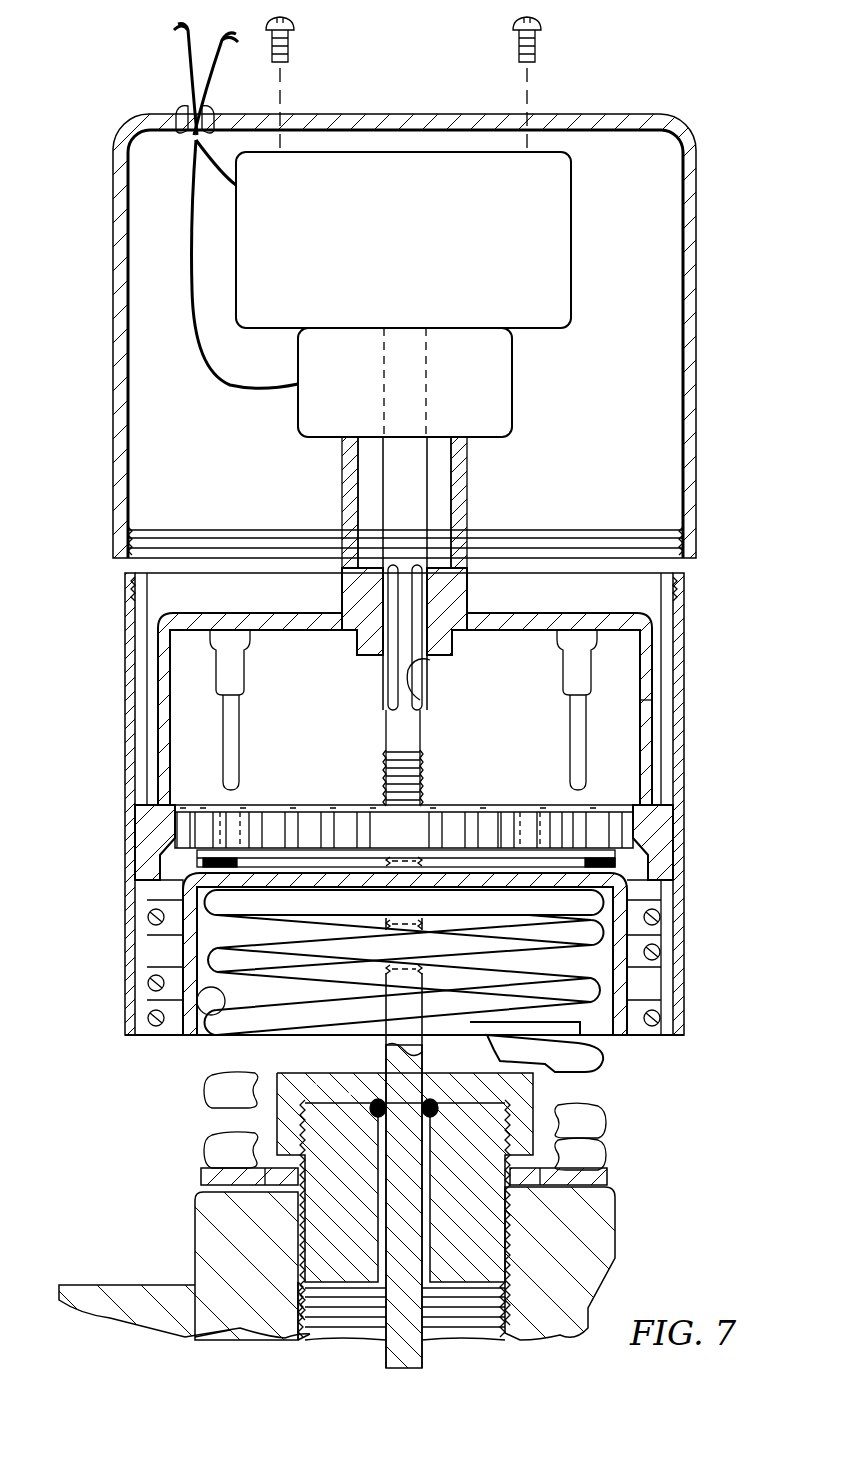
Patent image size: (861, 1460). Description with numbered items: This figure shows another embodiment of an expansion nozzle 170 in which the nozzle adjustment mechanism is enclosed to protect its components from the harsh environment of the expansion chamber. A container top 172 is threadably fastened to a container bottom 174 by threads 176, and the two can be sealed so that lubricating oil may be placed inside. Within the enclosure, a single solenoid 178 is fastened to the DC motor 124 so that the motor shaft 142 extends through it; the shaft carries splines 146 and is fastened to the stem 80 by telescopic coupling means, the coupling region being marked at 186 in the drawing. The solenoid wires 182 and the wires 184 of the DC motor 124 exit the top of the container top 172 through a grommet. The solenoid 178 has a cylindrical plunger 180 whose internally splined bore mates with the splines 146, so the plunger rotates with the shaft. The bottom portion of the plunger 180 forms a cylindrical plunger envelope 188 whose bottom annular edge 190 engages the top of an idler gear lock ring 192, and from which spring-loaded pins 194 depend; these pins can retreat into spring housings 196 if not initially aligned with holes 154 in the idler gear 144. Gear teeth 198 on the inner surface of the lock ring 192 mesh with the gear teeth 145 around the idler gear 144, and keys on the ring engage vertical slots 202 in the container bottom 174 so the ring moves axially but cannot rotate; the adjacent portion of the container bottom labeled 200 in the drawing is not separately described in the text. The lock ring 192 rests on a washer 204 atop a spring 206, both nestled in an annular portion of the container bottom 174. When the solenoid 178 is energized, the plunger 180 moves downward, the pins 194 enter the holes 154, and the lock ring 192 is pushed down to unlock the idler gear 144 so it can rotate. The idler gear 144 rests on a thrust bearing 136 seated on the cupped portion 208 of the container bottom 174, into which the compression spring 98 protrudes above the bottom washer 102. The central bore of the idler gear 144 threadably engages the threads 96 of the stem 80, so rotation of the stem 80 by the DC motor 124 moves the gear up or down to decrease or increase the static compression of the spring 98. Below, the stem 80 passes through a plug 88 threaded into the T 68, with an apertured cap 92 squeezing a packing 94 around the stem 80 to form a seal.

The expansion nozzle 170 is at (92, 80).
The container top 172 is at (697, 345).
The wires of the DC motor 184 is at (232, 186).
The solenoid wires 182 is at (218, 392).
The DC motor 124 is at (571, 236).
The solenoid 178 is at (512, 383).
The cylindrical plunger 180 is at (342, 507).
The motor shaft 142 is at (425, 484).
The splines 146 is at (383, 676).
The coupling 186 is at (417, 688).
The container bottom 174 is at (684, 702).
The threads 176 is at (684, 598).
The vertical slots 202 is at (135, 708).
The spring housings 196 is at (248, 672).
The spring-loaded pins 194 is at (239, 730).
The cylindrical plunger envelope 188 is at (640, 702).
The threads 96 is at (420, 794).
The holes 154 is at (240, 832).
The idler gear 144 is at (504, 825).
The gear teeth 145 is at (548, 826).
The gear teeth 198 is at (198, 830).
The left support block 200 is at (145, 830).
The bottom annular edge 190 is at (665, 826).
The idler gear lock ring 192 is at (660, 860).
The washer 204 is at (160, 888).
The thrust bearing 136 is at (630, 892).
The spring 206 is at (150, 1010).
The cupped portion 208 is at (218, 1036).
The stem 80 is at (422, 1355).
The packing 94 is at (432, 1098).
The apertured cap 92 is at (533, 1100).
The plug 88 is at (300, 1236).
The compression spring 98 is at (604, 1126).
The bottom washer 102 is at (607, 1176).
The T 68 is at (615, 1248).